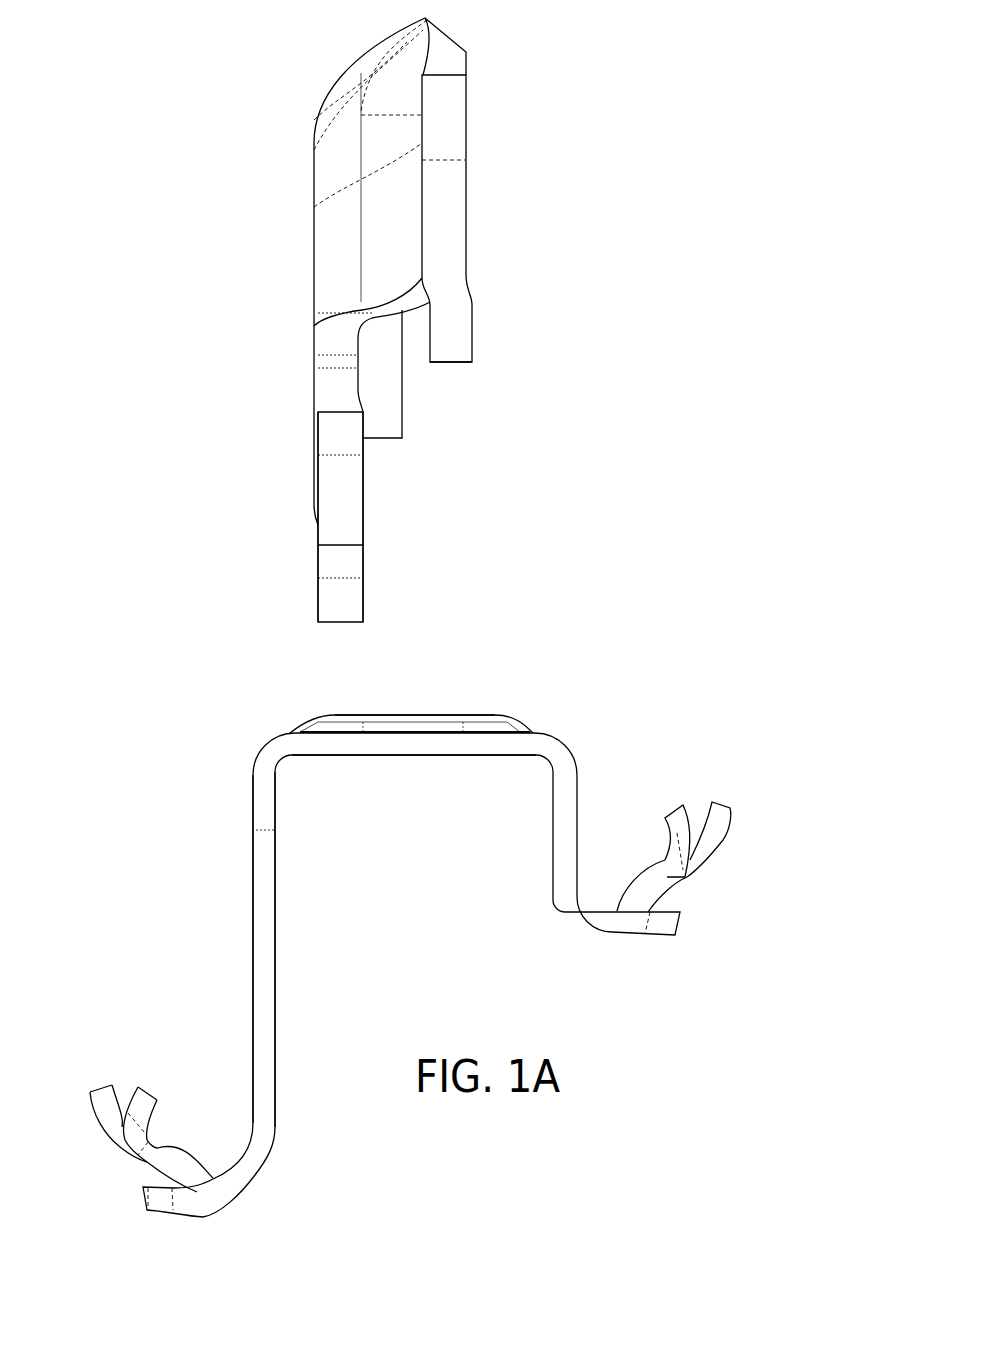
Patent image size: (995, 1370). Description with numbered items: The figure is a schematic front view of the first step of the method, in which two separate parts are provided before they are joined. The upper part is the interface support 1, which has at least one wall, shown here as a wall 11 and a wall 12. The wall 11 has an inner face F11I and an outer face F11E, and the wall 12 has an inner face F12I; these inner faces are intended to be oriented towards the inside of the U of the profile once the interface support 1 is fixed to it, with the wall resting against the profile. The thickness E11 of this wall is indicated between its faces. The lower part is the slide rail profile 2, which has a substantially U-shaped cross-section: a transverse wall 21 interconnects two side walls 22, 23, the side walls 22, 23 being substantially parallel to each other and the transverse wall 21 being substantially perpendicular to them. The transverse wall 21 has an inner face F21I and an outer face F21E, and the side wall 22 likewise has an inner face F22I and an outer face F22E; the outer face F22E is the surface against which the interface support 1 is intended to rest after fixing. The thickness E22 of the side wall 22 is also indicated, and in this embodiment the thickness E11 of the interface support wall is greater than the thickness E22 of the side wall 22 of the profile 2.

The interface support 1 is at (531, 133).
The wall 11 is at (286, 508).
The wall 12 is at (458, 323).
The outer face F11E is at (306, 569).
The inner face F11I is at (376, 511).
The thickness E11 is at (398, 545).
The inner face F12I is at (453, 373).
The slide rail profile 2 is at (556, 680).
The transverse wall 21 is at (426, 689).
The side wall 22 is at (281, 1021).
The side wall 23 is at (588, 796).
The outer face F21E is at (481, 721).
The inner face F21I is at (466, 763).
The thickness E22 is at (310, 830).
The inner face F22I is at (281, 962).
The outer face F22E is at (242, 972).